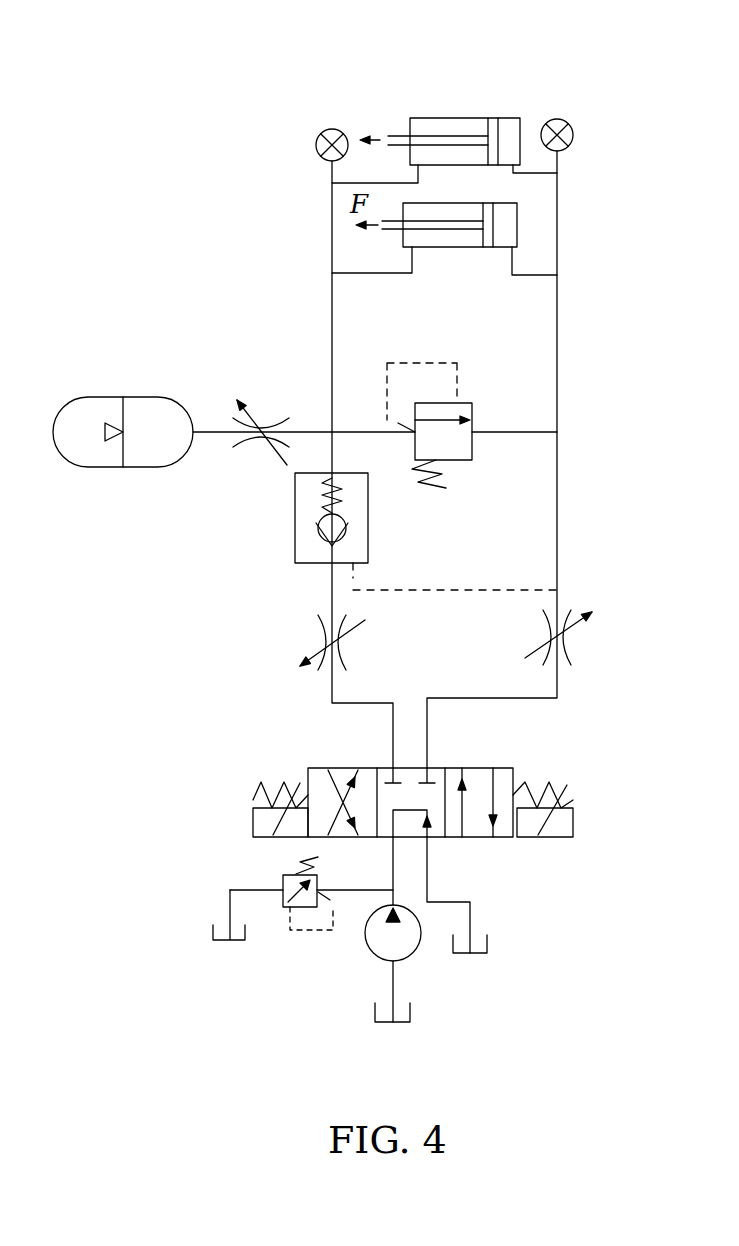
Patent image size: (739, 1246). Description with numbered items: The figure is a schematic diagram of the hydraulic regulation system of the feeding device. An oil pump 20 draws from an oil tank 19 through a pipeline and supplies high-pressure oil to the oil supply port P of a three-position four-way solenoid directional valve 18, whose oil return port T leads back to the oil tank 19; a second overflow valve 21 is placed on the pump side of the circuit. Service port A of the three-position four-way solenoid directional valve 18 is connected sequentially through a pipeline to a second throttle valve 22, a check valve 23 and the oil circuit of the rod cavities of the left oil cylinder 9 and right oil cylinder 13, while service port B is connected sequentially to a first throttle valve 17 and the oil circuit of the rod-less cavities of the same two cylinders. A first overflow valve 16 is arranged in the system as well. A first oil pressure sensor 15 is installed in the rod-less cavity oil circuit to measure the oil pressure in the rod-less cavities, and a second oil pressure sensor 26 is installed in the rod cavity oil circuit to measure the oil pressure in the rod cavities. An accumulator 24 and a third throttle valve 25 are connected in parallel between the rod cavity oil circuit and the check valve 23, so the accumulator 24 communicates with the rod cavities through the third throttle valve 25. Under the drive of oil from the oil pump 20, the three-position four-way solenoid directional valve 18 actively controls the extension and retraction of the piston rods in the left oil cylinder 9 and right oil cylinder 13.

The left oil cylinder 9 is at (465, 118).
The right oil cylinder 13 is at (508, 222).
The first oil pressure sensor 15 is at (569, 124).
The first overflow valve 16 is at (465, 433).
The first throttle valve 17 is at (562, 660).
The three-position four-way solenoid directional valve 18 is at (478, 817).
The oil tank 19 is at (492, 953).
The oil pump 20 is at (382, 943).
The second overflow valve 21 is at (300, 883).
The second throttle valve 22 is at (300, 666).
The check valve 23 is at (308, 503).
The accumulator 24 is at (147, 470).
The third throttle valve 25 is at (257, 400).
The second oil pressure sensor 26 is at (320, 134).